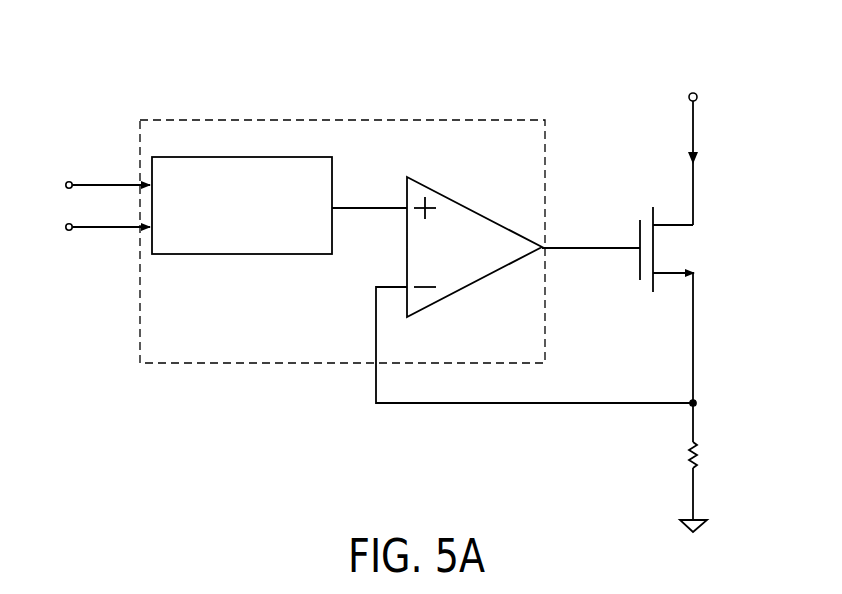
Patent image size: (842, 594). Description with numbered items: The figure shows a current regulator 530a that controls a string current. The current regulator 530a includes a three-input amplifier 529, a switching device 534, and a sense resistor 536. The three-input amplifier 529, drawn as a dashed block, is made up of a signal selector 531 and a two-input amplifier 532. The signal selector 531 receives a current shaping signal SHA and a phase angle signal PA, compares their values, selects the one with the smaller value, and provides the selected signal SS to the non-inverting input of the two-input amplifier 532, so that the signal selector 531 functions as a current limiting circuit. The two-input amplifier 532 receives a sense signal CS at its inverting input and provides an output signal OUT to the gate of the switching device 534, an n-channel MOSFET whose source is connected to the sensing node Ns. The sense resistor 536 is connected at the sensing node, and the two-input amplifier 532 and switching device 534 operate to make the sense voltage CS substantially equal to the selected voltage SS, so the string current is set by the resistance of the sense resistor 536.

The current regulator 530a is at (105, 76).
The three-input amplifier 529 is at (187, 363).
The signal selector 531 is at (248, 257).
The two-input amplifier 532 is at (475, 285).
The switching device 534 is at (626, 267).
The sense resistor 536 is at (700, 458).